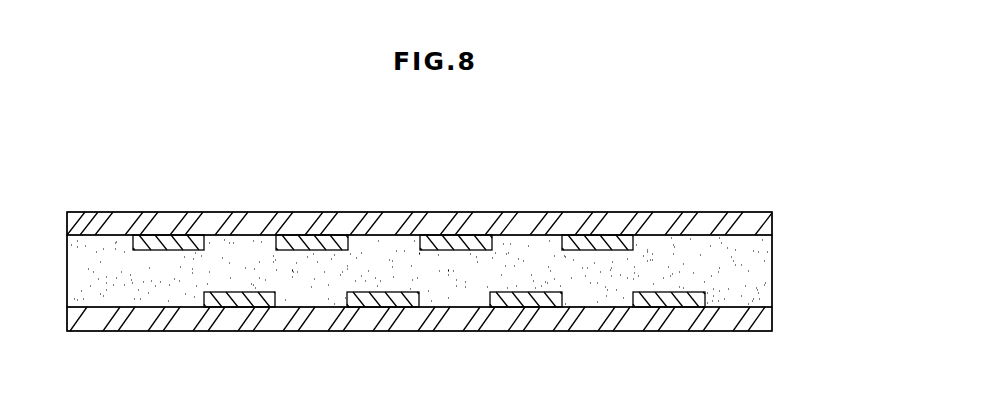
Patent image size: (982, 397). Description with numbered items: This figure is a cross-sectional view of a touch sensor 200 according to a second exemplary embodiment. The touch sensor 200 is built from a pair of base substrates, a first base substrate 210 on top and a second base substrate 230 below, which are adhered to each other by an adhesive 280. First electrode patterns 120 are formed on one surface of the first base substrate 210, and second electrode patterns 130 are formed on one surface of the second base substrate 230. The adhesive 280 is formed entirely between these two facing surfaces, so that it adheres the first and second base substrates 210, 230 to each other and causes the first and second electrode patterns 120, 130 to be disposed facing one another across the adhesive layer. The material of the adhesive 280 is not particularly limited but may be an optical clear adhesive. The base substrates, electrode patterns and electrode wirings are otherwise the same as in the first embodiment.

The touch sensor 200 is at (113, 182).
The first base substrate 210 is at (425, 222).
The second base substrate 230 is at (413, 322).
The adhesive 280 is at (753, 270).
The first electrode pattern 120 is at (172, 235).
The second electrode pattern 130 is at (235, 298).